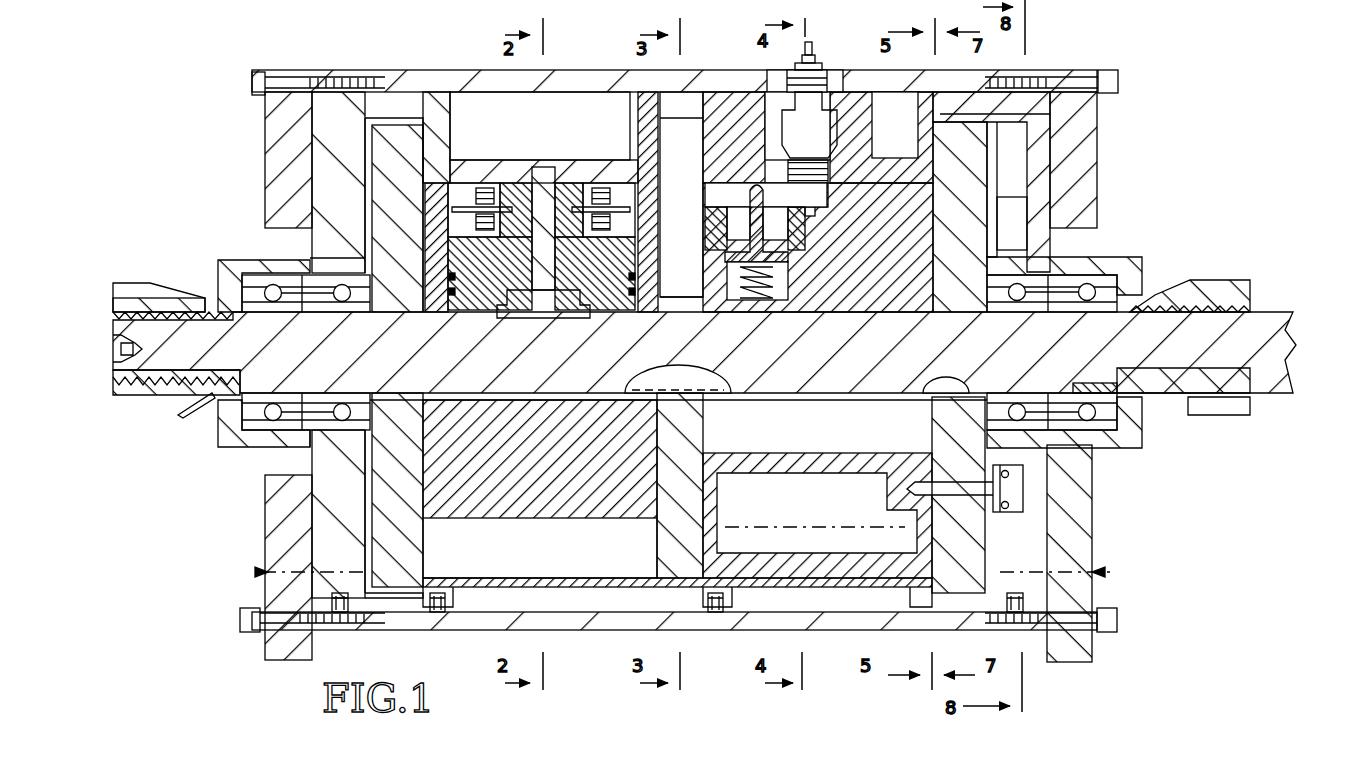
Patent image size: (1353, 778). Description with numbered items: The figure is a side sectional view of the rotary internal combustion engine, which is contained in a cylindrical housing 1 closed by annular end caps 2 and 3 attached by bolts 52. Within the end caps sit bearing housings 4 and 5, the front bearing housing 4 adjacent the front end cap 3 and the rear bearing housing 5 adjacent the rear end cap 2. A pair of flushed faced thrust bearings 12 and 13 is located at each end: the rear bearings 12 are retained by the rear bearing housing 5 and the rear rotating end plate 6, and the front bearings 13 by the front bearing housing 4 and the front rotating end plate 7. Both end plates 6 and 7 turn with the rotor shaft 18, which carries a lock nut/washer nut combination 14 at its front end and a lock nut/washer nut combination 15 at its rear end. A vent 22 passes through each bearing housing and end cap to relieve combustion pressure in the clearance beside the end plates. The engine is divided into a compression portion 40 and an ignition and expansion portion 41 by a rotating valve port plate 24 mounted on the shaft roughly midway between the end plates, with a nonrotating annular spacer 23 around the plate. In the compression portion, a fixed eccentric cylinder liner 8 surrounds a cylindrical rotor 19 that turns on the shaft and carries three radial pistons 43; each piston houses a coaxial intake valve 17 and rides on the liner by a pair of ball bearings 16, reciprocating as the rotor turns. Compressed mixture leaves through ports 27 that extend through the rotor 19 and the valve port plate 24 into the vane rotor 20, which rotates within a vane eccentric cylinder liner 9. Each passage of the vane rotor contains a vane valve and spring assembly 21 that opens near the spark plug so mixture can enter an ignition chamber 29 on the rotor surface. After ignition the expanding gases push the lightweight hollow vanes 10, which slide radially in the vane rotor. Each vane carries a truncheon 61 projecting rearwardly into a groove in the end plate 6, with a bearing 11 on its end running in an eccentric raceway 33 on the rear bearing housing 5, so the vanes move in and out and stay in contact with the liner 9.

The cylindrical housing 1 is at (1035, 70).
The rear end cap 2 is at (1095, 113).
The front end cap 3 is at (275, 131).
The front bearing housing 4 is at (325, 165).
The rear bearing housing 5 is at (1020, 172).
The rear rotating end plate 6 is at (965, 240).
The front rotating end plate 7 is at (395, 195).
The eccentric cylinder liner 8 is at (433, 105).
The vane eccentric cylinder liner 9 is at (950, 570).
The hollow vane 10 is at (930, 525).
The truncheon bearing 11 is at (1005, 474).
The rear thrust bearings 12 is at (1100, 262).
The front thrust bearings 13 is at (275, 293).
The lock nut/washer nut combination 14 is at (140, 288).
The lock nut/washer nut combination 15 is at (1245, 280).
The ball bearings 16 is at (470, 185).
The intake valve 17 is at (545, 170).
The rotor shaft 18 is at (270, 395).
The cylindrical rotor 19 is at (475, 453).
The vane rotor 20 is at (890, 230).
The vane valve and spring assembly 21 is at (790, 280).
The vent 22 is at (258, 570).
The nonrotating annular spacer 23 is at (673, 110).
The rotating valve port plate 24 is at (700, 295).
The ports 27 is at (683, 257).
The ignition chamber 29 is at (752, 265).
The raceway 33 is at (1018, 210).
The compression portion 40 is at (500, 108).
The ignition and expansion portion 41 is at (835, 40).
The cylindrical pistons 43 is at (440, 260).
The bolts 52 is at (255, 82).
The truncheon 61 is at (1080, 445).